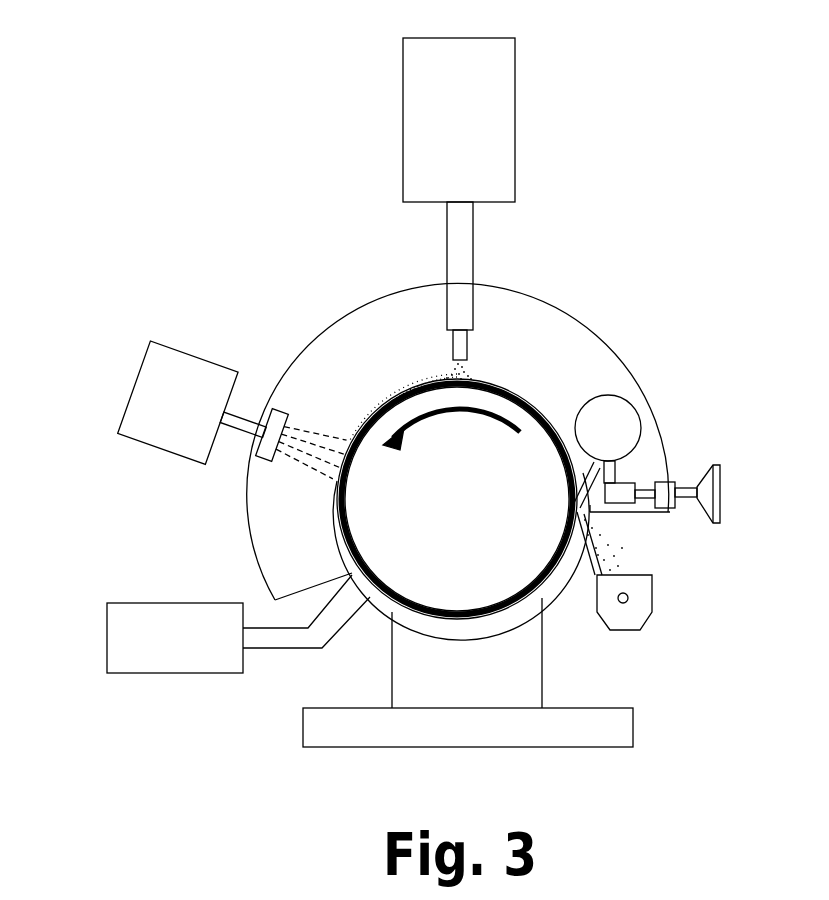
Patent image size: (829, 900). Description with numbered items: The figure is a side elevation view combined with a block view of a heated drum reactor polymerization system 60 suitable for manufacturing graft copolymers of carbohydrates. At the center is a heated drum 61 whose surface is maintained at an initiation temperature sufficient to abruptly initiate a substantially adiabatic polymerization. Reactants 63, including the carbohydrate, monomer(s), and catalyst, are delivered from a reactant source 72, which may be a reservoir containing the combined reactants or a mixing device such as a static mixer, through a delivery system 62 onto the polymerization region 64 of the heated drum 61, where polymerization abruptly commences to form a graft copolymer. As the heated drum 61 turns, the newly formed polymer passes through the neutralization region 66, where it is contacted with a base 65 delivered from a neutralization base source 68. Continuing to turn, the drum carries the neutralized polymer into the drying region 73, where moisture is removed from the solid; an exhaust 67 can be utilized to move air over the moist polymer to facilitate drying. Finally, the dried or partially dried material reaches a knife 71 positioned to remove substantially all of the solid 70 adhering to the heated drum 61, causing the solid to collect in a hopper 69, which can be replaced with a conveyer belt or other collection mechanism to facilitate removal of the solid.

The heated drum reactor polymerization system 60 is at (700, 180).
The heated drum 61 is at (478, 516).
The delivery system 62 is at (466, 347).
The reactants 63 is at (468, 372).
The polymerization region 64 is at (378, 403).
The base 65 is at (290, 462).
The neutralization region 66 is at (345, 478).
The exhaust 67 is at (112, 655).
The neutralization base source 68 is at (140, 417).
The hopper 69 is at (640, 617).
The solid 70 is at (625, 532).
The knife 71 is at (595, 482).
The reactant source 72 is at (483, 52).
The drying region 73 is at (372, 597).